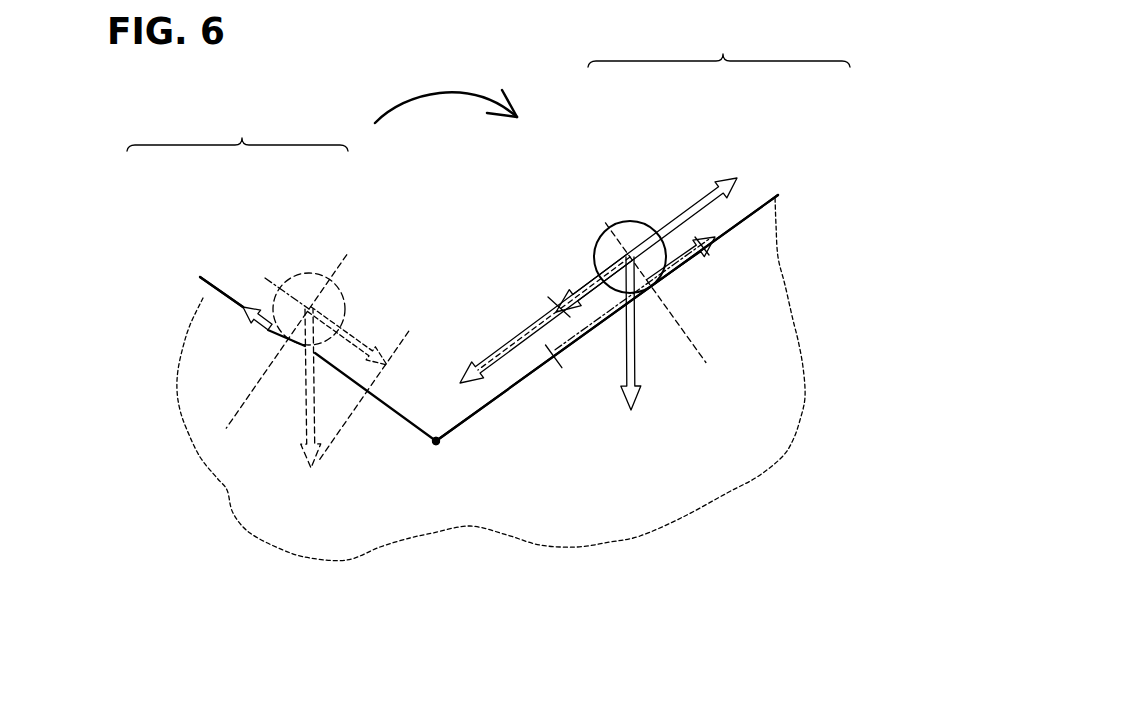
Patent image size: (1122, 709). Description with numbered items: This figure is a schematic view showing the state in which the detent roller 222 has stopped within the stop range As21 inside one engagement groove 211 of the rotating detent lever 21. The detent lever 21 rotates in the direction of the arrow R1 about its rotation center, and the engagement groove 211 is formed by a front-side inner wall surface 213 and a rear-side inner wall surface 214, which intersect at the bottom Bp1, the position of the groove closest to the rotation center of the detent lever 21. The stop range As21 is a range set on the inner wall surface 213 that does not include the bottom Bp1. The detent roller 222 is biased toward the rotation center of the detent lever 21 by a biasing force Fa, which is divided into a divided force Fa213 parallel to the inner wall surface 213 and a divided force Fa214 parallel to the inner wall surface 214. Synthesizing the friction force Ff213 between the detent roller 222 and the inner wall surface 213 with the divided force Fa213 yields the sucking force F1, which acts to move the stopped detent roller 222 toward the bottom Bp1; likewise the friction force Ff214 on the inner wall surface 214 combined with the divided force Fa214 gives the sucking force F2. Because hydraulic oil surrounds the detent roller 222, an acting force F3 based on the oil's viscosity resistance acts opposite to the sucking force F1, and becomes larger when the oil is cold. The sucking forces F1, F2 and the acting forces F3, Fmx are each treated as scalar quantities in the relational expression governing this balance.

The detent lever 21 is at (762, 430).
The engagement groove 211 is at (455, 243).
The inner wall surface 213 is at (747, 217).
The inner wall surface 214 is at (240, 298).
The detent roller 222 is at (630, 250).
The bottom Bp1 is at (436, 445).
The stop range As21 is at (587, 347).
The rotation direction R1 is at (440, 90).
The sucking force F1 is at (719, 48).
The sucking force F2 is at (237, 132).
The acting force F3 is at (703, 223).
The biasing force Fa is at (635, 380).
The acting force Fmx is at (520, 337).
The divided force Fa213 is at (565, 292).
The friction force Ff213 is at (717, 238).
The divided force Fa214 is at (342, 327).
The friction force Ff214 is at (260, 323).